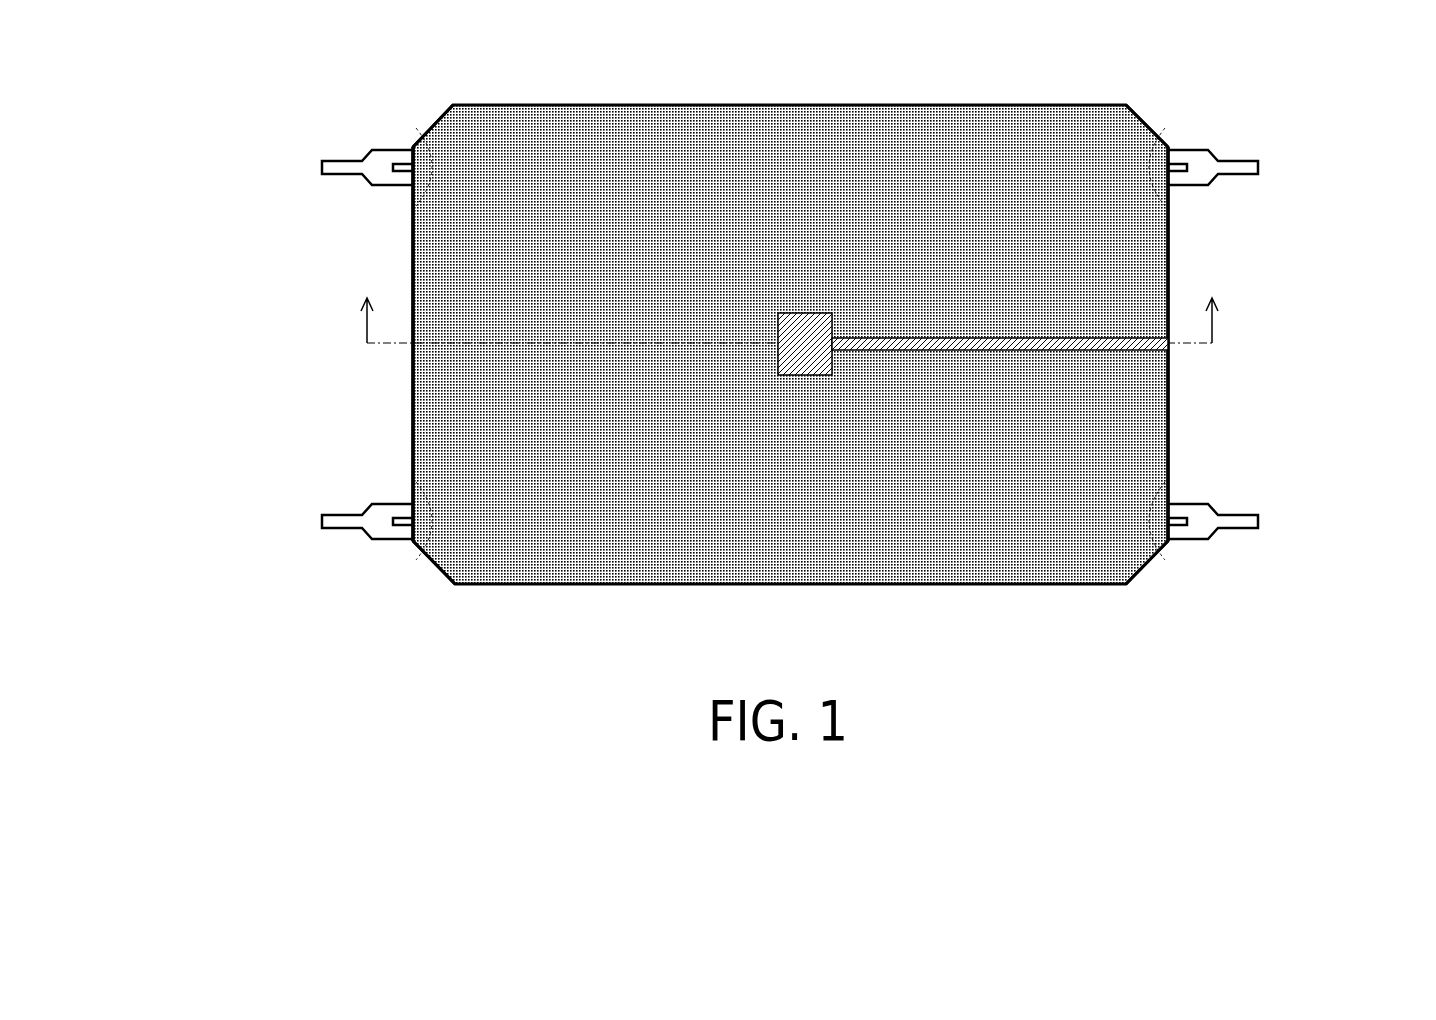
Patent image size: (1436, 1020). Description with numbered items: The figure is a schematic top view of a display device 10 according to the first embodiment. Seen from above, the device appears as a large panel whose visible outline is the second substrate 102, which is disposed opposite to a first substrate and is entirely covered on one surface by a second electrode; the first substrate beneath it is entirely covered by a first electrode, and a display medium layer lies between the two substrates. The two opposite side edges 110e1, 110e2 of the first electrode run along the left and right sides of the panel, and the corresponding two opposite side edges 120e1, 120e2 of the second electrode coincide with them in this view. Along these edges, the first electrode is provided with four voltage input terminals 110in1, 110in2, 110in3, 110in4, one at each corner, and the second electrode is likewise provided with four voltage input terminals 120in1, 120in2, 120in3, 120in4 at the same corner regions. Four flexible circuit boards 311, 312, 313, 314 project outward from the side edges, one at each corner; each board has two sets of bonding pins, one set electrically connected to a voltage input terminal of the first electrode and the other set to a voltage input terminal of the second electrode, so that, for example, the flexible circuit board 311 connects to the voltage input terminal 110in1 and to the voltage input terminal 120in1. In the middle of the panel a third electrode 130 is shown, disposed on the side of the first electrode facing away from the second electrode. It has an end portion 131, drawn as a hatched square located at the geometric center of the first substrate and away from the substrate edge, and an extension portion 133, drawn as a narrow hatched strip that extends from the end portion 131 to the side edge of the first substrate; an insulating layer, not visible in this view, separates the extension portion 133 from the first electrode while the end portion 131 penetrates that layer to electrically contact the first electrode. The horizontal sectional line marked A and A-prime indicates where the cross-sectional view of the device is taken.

The display device 10 is at (1380, 655).
The second substrate 102 is at (1013, 105).
The third electrode 130 is at (972, 187).
The end portion 131 is at (795, 313).
The extension portion 133 is at (880, 338).
The flexible circuit board 311 is at (1258, 167).
The flexible circuit board 312 is at (322, 167).
The flexible circuit board 313 is at (1258, 521).
The flexible circuit board 314 is at (322, 521).
The voltage input terminal 110in1 is at (1172, 207).
The voltage input terminal 110in2 is at (411, 206).
The voltage input terminal 110in3 is at (1160, 556).
The voltage input terminal 110in4 is at (420, 556).
The voltage input terminal 120in1 is at (1163, 134).
The voltage input terminal 120in2 is at (420, 137).
The voltage input terminal 120in3 is at (1170, 482).
The voltage input terminal 120in4 is at (418, 490).
The side edge 110e1 is at (1182, 384).
The side edge 120e1 is at (1170, 378).
The side edge 110e2 is at (398, 384).
The side edge 120e2 is at (410, 378).